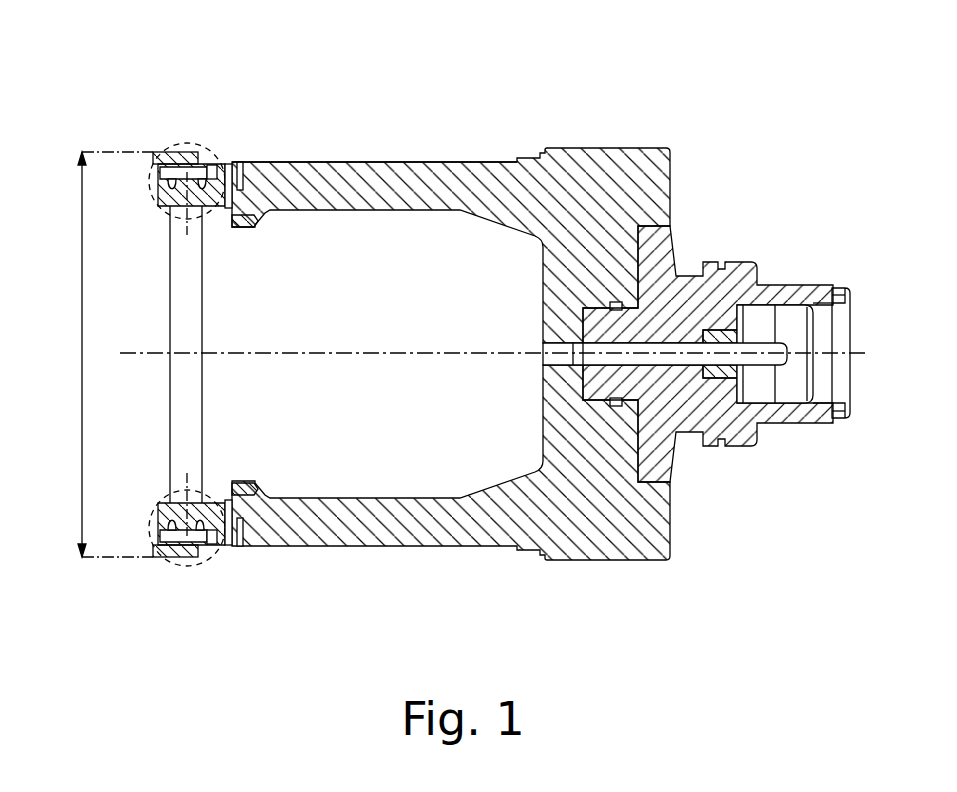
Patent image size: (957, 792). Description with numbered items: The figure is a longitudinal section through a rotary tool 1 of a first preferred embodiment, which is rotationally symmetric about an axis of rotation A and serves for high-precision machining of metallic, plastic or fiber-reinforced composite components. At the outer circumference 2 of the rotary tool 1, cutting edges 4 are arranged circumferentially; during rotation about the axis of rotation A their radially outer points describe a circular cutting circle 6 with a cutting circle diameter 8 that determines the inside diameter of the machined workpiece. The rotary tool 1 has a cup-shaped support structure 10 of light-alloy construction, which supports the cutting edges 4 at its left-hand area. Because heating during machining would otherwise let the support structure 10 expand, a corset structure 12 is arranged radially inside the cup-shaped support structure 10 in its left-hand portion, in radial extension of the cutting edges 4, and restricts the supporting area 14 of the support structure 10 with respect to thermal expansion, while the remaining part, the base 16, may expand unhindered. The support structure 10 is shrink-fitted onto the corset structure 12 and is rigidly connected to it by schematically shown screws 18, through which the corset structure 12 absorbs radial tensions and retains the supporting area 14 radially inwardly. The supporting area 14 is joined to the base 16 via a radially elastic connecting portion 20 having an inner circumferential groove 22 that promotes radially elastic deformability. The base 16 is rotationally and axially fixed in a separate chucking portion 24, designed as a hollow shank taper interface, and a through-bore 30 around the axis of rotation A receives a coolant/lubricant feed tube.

The rotary tool 1 is at (201, 80).
The outer circumference 2 is at (203, 150).
The cutting edges 4 is at (168, 150).
The cutting circle 6 is at (108, 148).
The cutting circle diameter 8 is at (80, 354).
The support structure 10 is at (366, 147).
The corset structure 12 is at (191, 319).
The supporting area 14 is at (158, 207).
The base 16 is at (428, 165).
The screws 18 is at (190, 226).
The radially elastic connecting portion 20 is at (233, 156).
The inner circumferential groove 22 is at (270, 220).
The chucking portion 24 is at (744, 250).
The through-bore 30 is at (688, 357).
The axis of rotation A is at (368, 356).